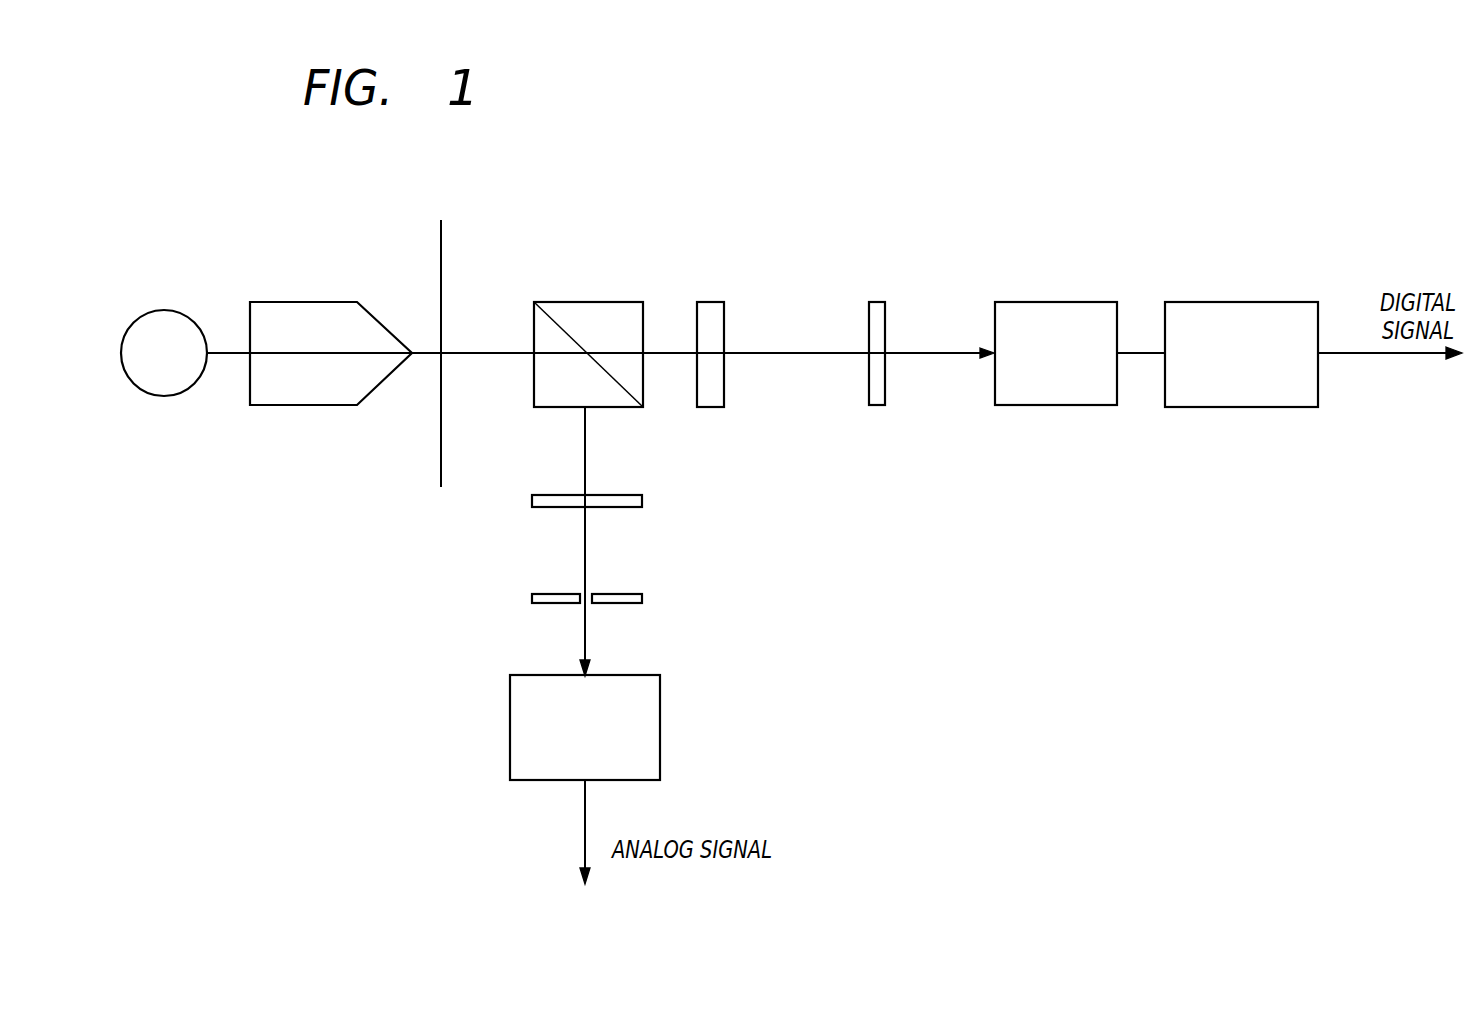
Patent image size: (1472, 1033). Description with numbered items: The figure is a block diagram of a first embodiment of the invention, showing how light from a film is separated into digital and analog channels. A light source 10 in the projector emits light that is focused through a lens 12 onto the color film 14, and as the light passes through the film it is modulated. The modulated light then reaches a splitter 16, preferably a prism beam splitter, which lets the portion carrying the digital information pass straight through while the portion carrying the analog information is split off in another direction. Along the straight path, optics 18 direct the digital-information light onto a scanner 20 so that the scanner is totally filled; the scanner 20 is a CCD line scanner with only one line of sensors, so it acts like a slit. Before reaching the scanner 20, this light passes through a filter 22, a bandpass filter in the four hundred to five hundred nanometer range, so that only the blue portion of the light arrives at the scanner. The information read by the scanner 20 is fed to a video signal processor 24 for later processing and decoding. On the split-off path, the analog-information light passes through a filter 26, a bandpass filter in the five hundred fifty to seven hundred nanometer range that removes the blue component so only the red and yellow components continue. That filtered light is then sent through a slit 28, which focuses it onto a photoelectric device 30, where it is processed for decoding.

The light source 10 is at (162, 395).
The lens 12 is at (322, 302).
The color film 14 is at (441, 458).
The splitter 16 is at (557, 407).
The optics 18 is at (724, 385).
The scanner 20 is at (1072, 405).
The filter 22 is at (885, 390).
The video signal processor 24 is at (1270, 407).
The filter 26 is at (545, 508).
The slit 28 is at (545, 605).
The photoelectric device 30 is at (510, 760).